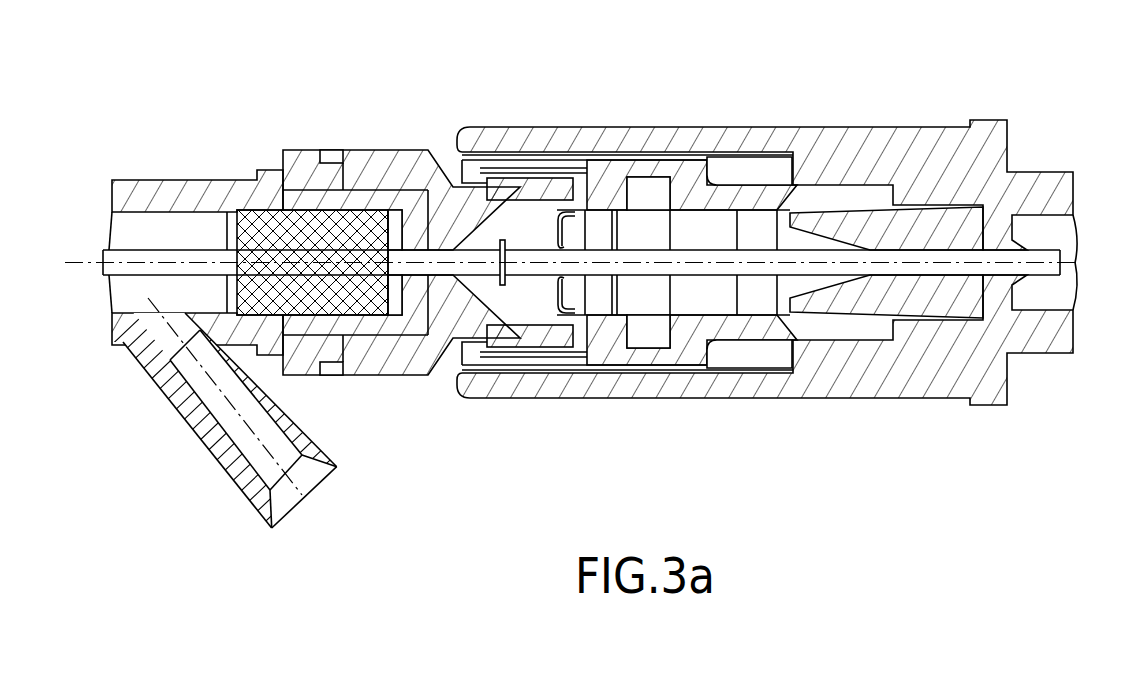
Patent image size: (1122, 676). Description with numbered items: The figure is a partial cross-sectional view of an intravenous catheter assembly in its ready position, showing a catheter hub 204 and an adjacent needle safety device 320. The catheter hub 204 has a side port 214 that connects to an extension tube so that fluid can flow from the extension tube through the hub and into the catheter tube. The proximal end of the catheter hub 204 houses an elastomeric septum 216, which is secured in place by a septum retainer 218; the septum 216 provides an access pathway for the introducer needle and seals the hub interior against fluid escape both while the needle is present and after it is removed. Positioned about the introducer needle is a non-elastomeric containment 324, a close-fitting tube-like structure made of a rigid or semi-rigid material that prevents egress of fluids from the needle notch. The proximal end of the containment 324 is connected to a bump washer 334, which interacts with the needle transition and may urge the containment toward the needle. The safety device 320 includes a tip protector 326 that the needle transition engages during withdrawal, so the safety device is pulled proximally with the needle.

The catheter hub 204 is at (137, 182).
The side port 214 is at (228, 450).
The elastomeric septum 216 is at (299, 216).
The septum retainer 218 is at (377, 160).
The needle safety device 320 is at (832, 97).
The containment 324 is at (419, 265).
The tip protector 326 is at (642, 200).
The bump washer 334 is at (506, 262).